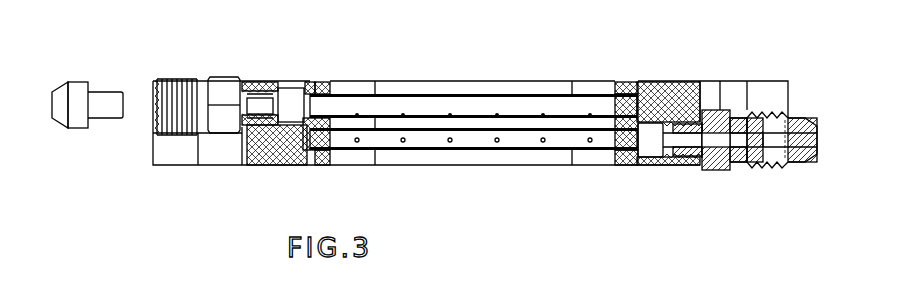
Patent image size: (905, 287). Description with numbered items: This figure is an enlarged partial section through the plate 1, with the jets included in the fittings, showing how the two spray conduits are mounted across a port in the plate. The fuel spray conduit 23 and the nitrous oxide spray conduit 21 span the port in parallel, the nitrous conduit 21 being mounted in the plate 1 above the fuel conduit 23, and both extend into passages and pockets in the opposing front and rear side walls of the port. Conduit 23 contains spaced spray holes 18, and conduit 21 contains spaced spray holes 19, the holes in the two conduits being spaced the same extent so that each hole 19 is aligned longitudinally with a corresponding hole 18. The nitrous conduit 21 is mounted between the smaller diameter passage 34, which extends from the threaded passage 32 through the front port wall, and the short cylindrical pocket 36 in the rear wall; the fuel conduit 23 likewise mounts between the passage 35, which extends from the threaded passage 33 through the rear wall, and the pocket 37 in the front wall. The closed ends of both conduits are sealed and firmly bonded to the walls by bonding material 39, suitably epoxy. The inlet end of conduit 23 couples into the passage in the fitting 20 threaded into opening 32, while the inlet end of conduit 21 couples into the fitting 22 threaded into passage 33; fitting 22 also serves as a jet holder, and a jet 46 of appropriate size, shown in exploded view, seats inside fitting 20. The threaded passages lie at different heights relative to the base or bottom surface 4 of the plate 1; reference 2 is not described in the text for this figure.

The plate 1 is at (153, 148).
The fitting 2 is at (275, 82).
The base or bottom surface 4 is at (282, 142).
The spray holes 18 is at (403, 142).
The spray holes 19 is at (403, 114).
The fitting 20 is at (222, 77).
The spray conduit 21 is at (503, 97).
The fitting 22 is at (720, 170).
The spray conduit 23 is at (512, 152).
The threaded passage 32 is at (250, 128).
The threaded passage 33 is at (692, 160).
The passage portion 34 is at (310, 88).
The passage 35 is at (635, 152).
The pocket 36 is at (655, 88).
The pocket 37 is at (303, 138).
The bonding material 39 is at (332, 88).
The jet 46 is at (75, 80).